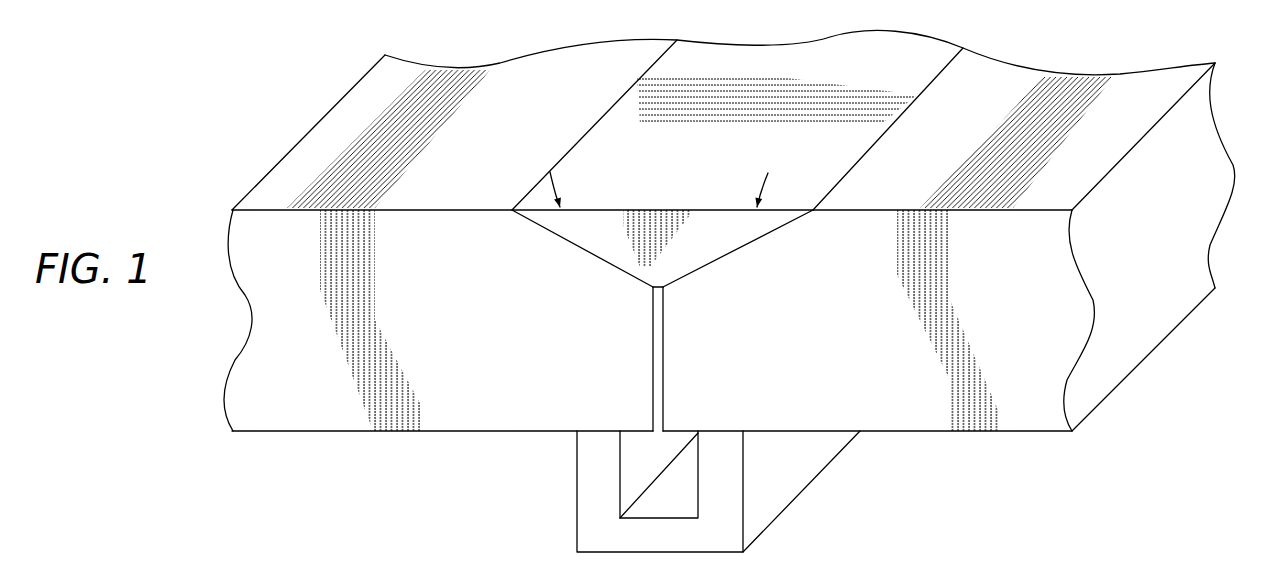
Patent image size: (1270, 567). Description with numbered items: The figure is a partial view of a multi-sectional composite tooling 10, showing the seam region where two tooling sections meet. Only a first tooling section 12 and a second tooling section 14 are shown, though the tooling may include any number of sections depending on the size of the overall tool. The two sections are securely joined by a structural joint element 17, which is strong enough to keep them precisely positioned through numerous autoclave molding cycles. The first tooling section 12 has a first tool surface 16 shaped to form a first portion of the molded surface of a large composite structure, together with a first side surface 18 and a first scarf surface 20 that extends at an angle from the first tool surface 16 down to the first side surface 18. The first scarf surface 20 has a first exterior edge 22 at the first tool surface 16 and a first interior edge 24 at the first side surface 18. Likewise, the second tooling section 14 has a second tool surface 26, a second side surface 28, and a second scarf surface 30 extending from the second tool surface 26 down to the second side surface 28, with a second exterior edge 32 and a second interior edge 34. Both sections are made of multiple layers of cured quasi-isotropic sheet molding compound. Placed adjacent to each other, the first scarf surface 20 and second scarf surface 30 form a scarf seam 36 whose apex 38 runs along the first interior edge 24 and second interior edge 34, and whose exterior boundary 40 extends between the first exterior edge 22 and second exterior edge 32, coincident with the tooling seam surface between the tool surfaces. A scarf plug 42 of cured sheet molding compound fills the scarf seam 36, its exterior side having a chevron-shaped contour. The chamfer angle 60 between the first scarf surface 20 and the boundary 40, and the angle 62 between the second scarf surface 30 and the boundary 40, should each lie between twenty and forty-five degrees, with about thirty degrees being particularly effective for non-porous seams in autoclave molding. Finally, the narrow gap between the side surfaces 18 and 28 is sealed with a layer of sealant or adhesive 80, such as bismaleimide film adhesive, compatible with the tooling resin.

The multi-sectional tooling 10 is at (285, 115).
The first tooling section 12 is at (1150, 293).
The second tooling section 14 is at (263, 380).
The first tool surface 16 is at (1157, 83).
The structural joint element 17 is at (577, 528).
The first side surface 18 is at (663, 347).
The first scarf surface 20 is at (703, 260).
The first exterior edge 22 is at (852, 160).
The first interior edge 24 is at (667, 288).
The second tool surface 26 is at (281, 195).
The second side surface 28 is at (655, 385).
The second scarf surface 30 is at (606, 260).
The second exterior edge 32 is at (568, 152).
The second interior edge 34 is at (655, 287).
The scarf seam 36 is at (887, 60).
The apex 38 is at (658, 287).
The exterior boundary 40 is at (617, 210).
The scarf plug 42 is at (575, 230).
The angle 60 is at (772, 249).
The angle 62 is at (545, 250).
The sealant or adhesive 80 is at (657, 433).